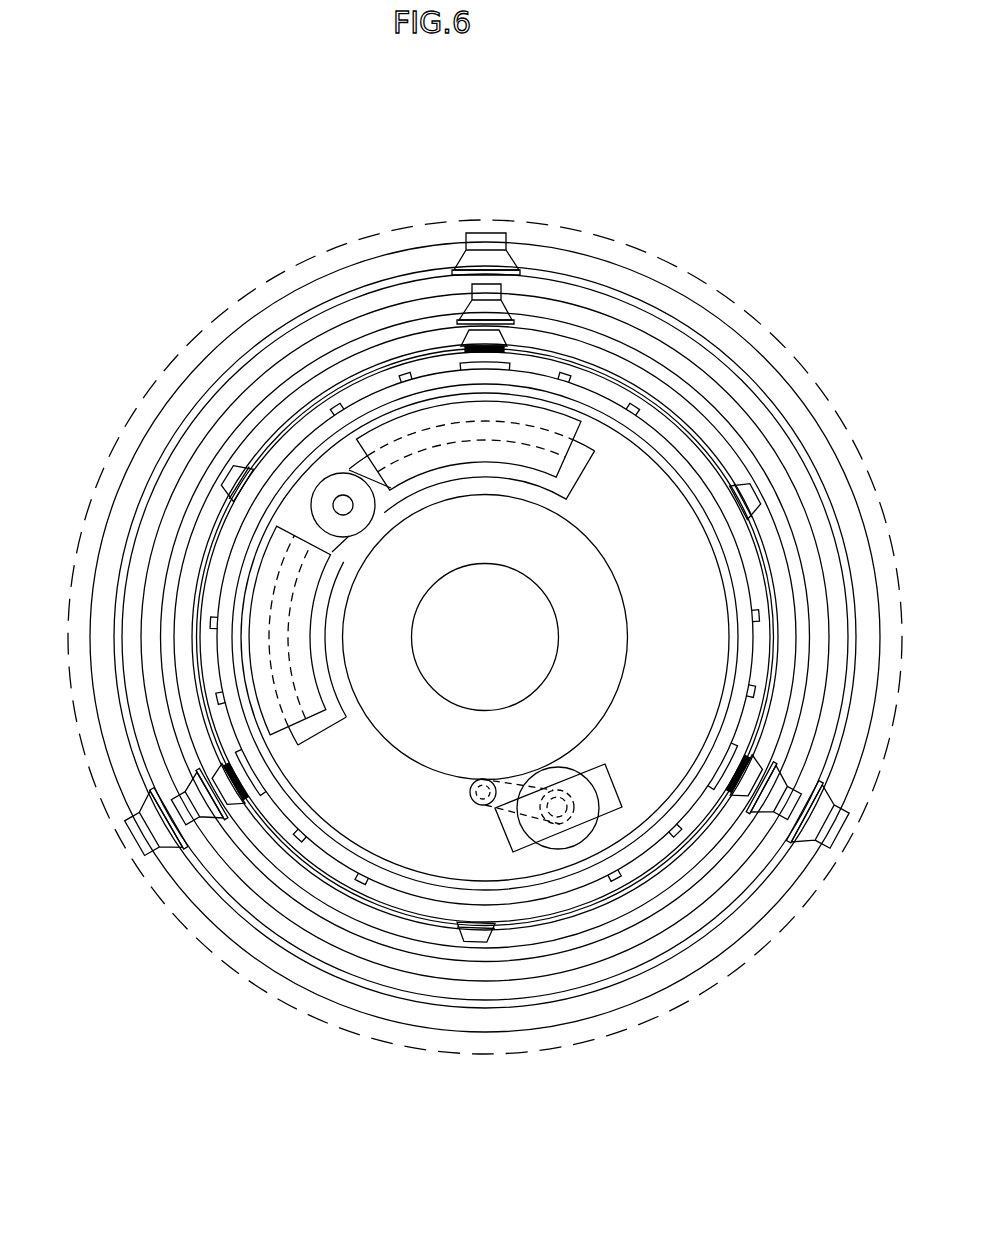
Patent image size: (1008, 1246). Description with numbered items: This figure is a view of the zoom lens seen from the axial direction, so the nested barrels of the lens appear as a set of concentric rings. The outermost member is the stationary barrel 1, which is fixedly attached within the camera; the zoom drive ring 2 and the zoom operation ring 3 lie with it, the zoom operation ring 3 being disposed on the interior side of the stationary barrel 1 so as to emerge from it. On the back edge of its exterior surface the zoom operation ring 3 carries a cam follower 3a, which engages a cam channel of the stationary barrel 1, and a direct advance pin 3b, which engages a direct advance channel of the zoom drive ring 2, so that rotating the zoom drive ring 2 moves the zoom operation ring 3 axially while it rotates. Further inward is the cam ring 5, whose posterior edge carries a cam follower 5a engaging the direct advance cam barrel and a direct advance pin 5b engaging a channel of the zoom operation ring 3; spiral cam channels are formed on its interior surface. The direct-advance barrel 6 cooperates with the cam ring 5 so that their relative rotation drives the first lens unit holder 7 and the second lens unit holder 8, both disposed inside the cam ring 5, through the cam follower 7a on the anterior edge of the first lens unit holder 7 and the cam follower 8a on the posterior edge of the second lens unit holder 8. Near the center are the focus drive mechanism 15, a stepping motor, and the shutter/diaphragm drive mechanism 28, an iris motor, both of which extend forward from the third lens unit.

The stationary barrel 1 is at (352, 275).
The zoom drive ring 2 is at (300, 272).
The zoom operation ring 3 is at (400, 312).
The cam follower 3a is at (517, 265).
The direct advance pin 3b is at (520, 228).
The cam ring 5 is at (450, 335).
The cam follower 5a is at (500, 340).
The direct advance pin 5b is at (517, 297).
The direct-advance barrel 6 is at (695, 457).
The first lens unit holder 7 is at (783, 507).
The cam follower 7a is at (790, 500).
The second lens unit holder 8 is at (618, 398).
The cam follower 8a is at (538, 370).
The focus drive mechanism 15 is at (328, 488).
The shutter/diaphragm drive mechanism 28 is at (585, 850).